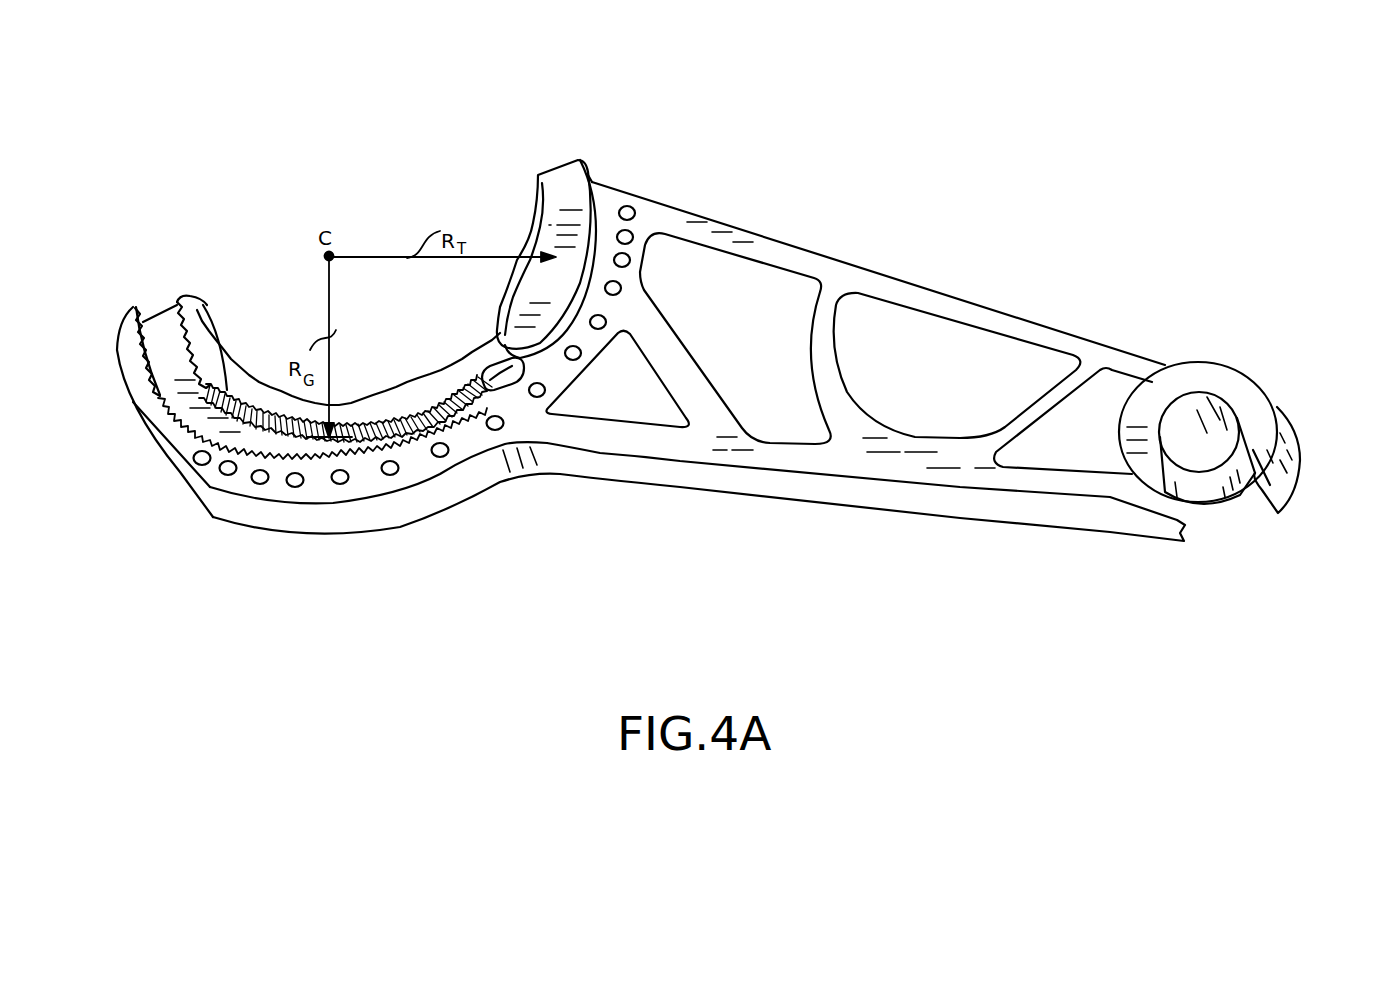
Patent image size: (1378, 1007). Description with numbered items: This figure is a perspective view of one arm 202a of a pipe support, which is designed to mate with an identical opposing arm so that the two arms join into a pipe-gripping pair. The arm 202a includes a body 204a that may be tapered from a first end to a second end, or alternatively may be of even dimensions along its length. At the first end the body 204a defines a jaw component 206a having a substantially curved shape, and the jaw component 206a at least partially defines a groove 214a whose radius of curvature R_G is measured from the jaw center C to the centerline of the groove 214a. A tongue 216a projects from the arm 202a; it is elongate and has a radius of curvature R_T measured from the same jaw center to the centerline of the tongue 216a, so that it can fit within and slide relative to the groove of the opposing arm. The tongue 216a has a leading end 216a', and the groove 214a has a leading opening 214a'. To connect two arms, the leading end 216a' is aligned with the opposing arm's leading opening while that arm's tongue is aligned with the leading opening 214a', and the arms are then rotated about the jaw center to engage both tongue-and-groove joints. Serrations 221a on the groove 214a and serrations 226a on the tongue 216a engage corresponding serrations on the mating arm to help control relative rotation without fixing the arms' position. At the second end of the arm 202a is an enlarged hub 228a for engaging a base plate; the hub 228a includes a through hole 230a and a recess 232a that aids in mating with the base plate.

The arm 202a is at (925, 220).
The body 204a is at (610, 197).
The jaw component 206a is at (210, 473).
The groove 214a is at (139, 314).
The leading opening 214a' is at (191, 312).
The tongue 216a is at (546, 196).
The leading end 216a' is at (518, 226).
The serrations 221a is at (203, 305).
The serrations 226a is at (546, 350).
The enlarged hub 228a is at (1247, 390).
The through hole 230a is at (1208, 472).
The recess 232a is at (1243, 535).